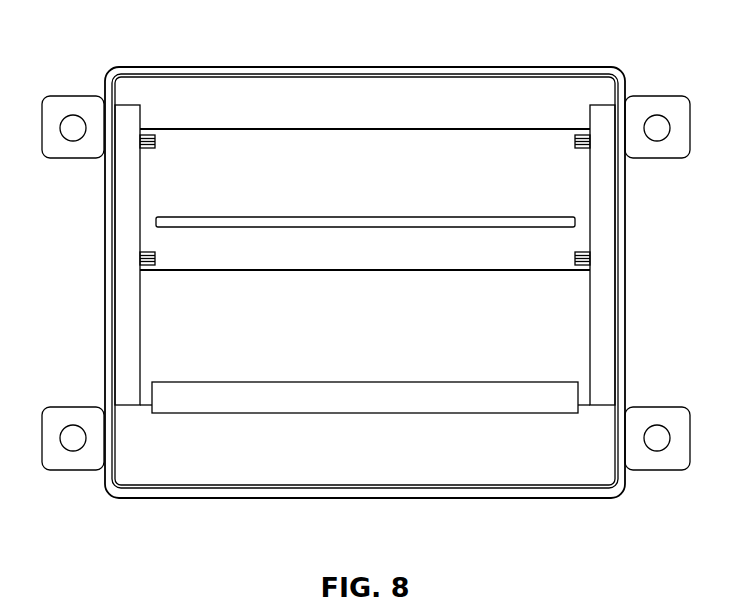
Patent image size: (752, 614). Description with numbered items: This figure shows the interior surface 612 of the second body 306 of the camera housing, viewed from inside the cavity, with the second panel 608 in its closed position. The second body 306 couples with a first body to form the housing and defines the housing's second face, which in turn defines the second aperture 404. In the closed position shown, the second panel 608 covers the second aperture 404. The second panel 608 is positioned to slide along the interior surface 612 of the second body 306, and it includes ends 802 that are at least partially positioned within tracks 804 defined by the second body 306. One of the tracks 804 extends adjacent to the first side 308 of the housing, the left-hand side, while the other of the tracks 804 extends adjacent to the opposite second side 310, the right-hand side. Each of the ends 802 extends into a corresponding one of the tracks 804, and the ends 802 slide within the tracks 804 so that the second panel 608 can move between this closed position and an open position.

The second body 306 is at (582, 475).
The first side 308 is at (103, 360).
The second side 310 is at (628, 360).
The second aperture 404 is at (481, 108).
The second panel 608 is at (343, 193).
The interior surface 612 is at (374, 107).
The ends 802 is at (151, 110).
The tracks 804 is at (127, 313).